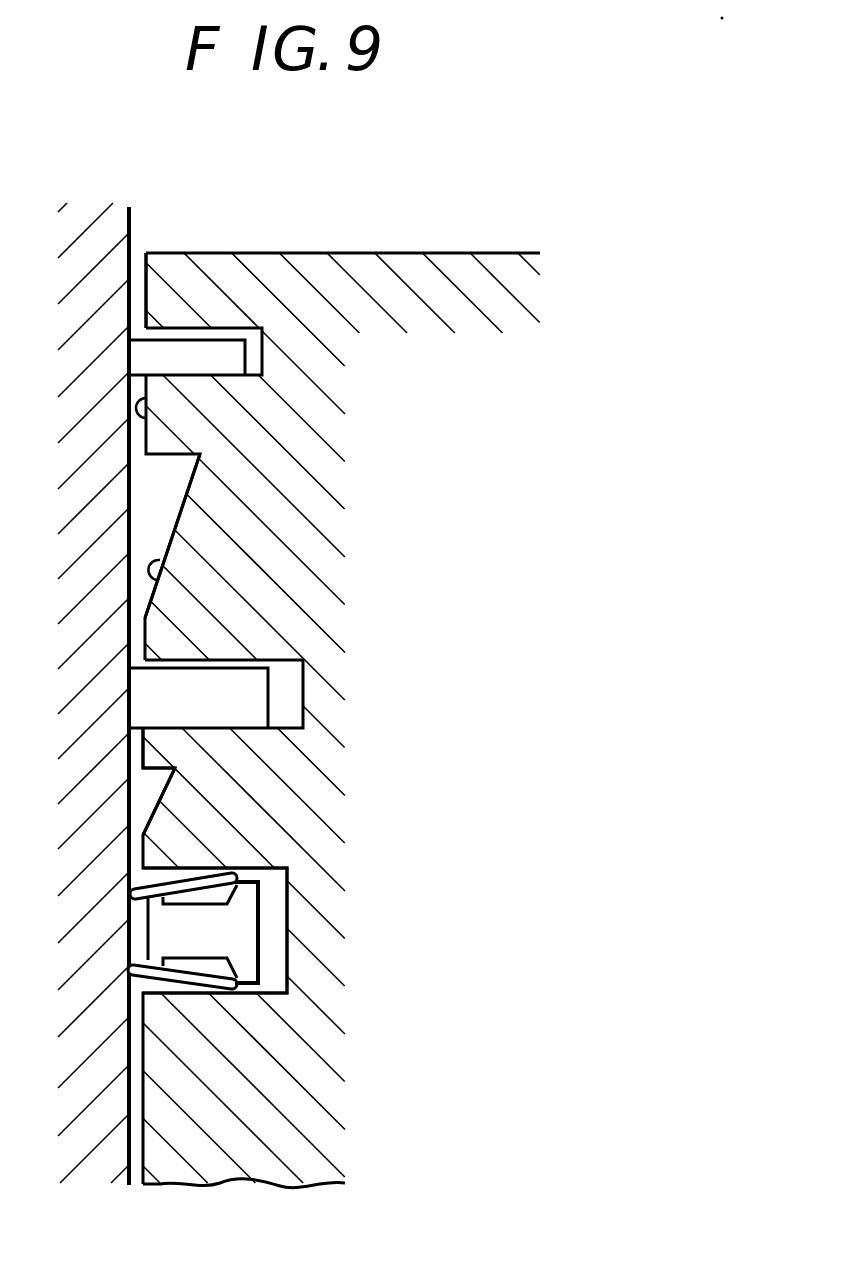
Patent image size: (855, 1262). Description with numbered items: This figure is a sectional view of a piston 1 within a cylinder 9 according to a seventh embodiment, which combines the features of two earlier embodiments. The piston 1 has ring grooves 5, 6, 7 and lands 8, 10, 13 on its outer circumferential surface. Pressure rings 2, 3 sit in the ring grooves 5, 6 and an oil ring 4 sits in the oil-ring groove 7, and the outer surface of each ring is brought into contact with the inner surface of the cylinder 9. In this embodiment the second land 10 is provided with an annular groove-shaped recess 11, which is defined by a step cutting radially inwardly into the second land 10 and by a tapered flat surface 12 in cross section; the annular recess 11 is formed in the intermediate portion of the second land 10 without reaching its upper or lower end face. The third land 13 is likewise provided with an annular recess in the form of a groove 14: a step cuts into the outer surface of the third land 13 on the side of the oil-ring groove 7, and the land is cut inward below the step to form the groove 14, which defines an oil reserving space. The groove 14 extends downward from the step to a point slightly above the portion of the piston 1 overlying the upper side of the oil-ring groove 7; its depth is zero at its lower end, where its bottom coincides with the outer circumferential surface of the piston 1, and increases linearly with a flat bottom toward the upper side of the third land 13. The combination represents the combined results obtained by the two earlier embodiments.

The piston 1 is at (408, 230).
The pressure ring 2 is at (237, 358).
The pressure ring 3 is at (258, 707).
The oil ring 4 is at (245, 912).
The ring groove 5 is at (258, 340).
The ring groove 6 is at (287, 672).
The oil-ring groove 7 is at (275, 974).
The land 8 is at (146, 280).
The cylinder 9 is at (82, 348).
The second land 10 is at (141, 416).
The annular recess 11 is at (163, 496).
The tapered flat surface 12 is at (150, 566).
The third land 13 is at (143, 747).
The groove 14 is at (142, 803).